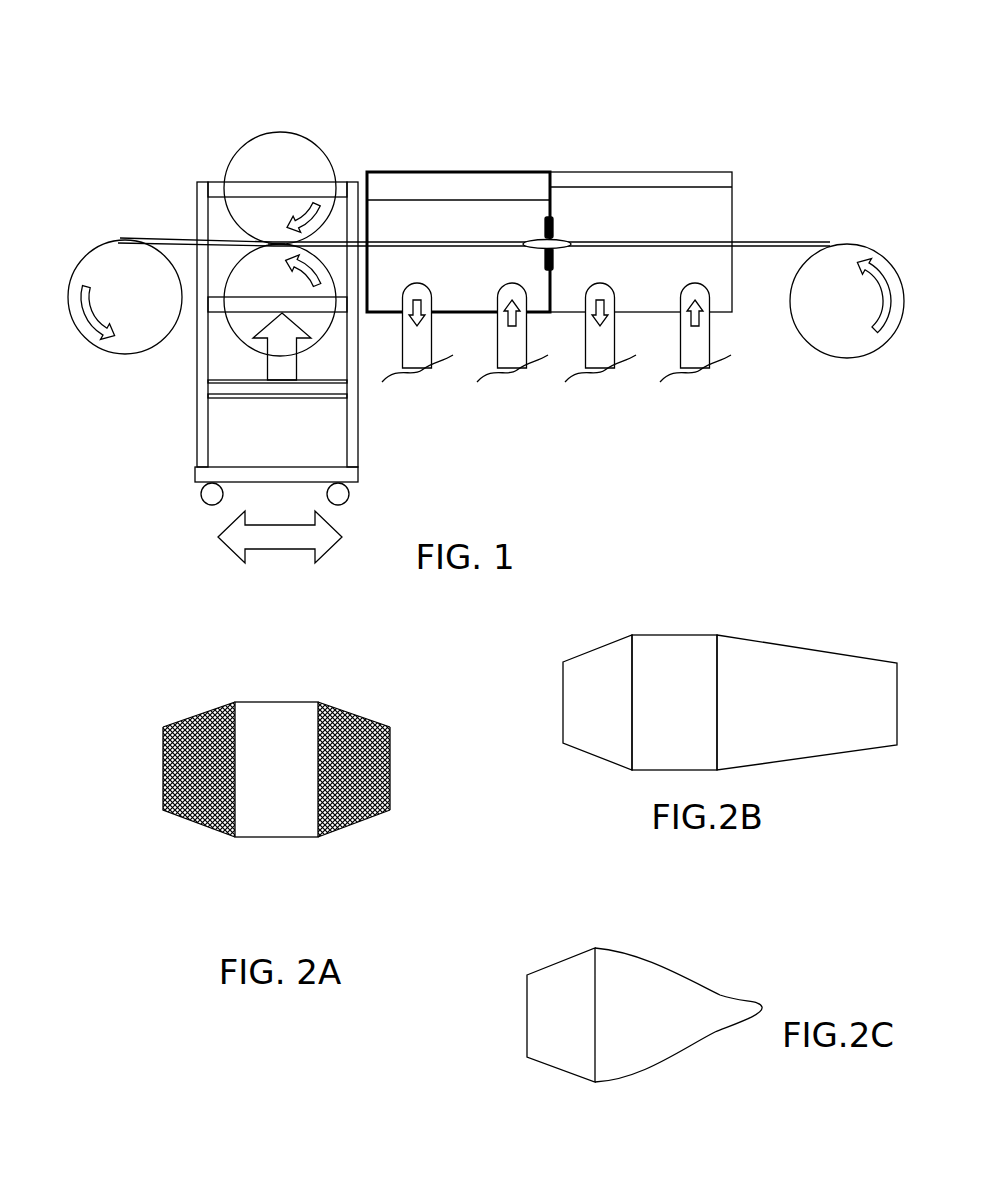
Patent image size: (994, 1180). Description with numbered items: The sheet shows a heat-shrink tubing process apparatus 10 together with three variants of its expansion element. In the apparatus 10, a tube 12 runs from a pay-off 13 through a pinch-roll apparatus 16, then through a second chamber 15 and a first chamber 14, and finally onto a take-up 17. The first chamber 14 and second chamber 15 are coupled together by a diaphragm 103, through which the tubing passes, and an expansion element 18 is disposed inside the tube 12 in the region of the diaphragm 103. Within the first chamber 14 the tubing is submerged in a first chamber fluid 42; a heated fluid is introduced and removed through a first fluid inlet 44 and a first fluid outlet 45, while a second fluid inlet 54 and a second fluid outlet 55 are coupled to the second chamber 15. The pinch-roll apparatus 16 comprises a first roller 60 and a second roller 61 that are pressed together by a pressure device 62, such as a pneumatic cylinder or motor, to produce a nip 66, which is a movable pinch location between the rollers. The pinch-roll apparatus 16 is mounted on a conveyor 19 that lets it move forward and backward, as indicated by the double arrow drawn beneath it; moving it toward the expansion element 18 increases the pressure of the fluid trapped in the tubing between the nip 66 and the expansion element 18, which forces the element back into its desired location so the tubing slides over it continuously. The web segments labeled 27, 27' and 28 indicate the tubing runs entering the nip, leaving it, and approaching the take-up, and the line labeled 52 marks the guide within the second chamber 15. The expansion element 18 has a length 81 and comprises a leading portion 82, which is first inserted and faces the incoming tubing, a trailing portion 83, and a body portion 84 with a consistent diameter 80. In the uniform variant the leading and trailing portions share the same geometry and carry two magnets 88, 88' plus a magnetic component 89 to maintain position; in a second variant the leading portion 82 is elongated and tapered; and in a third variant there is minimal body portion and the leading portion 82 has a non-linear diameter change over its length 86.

In FIG. 1, the heat-shrink tubing process apparatus 10 is at (362, 78).
In FIG. 1, the tube 12 is at (828, 238).
In FIG. 1, the pay-off 13 is at (823, 346).
In FIG. 1, the first chamber 14 is at (710, 178).
In FIG. 1, the second chamber 15 is at (413, 178).
In FIG. 1, the pinch-roll apparatus 16 is at (253, 158).
In FIG. 1, the take-up 17 is at (103, 273).
In FIG. 1, the expansion element 18 is at (568, 240).
In FIG. 2A, the expansion element 18 is at (247, 723).
In FIG. 2B, the expansion element 18 is at (660, 655).
In FIG. 2C, the expansion element 18 is at (622, 983).
In FIG. 1, the conveyor 19 is at (343, 473).
In FIG. 1, the web portion 27 is at (411, 174).
In FIG. 1, the incoming web portion 27' is at (176, 180).
In FIG. 1, the outgoing web portion 28 is at (770, 241).
In FIG. 1, the first chamber fluid 42 is at (637, 178).
In FIG. 1, the first fluid inlet 44 is at (700, 352).
In FIG. 1, the first fluid outlet 45 is at (603, 352).
In FIG. 1, the station inner guide 52 is at (478, 186).
In FIG. 1, the second fluid inlet 54 is at (517, 352).
In FIG. 1, the second fluid outlet 55 is at (422, 352).
In FIG. 1, the first roller 60 is at (260, 146).
In FIG. 1, the second roller 61 is at (235, 320).
In FIG. 1, the pressure device 62 is at (282, 372).
In FIG. 1, the nip 66 is at (283, 240).
In FIG. 2A, the diameter 80 is at (273, 705).
In FIG. 2A, the length 81 is at (390, 823).
In FIG. 2A, the leading portion 82 is at (357, 717).
In FIG. 2B, the leading portion 82 is at (758, 672).
In FIG. 2C, the leading portion 82 is at (713, 995).
In FIG. 2A, the trailing portion 83 is at (177, 723).
In FIG. 2B, the trailing portion 83 is at (590, 673).
In FIG. 2C, the trailing portion 83 is at (547, 1000).
In FIG. 2A, the body portion 84 is at (292, 722).
In FIG. 2B, the body portion 84 is at (698, 663).
In FIG. 2C, the length 86 is at (762, 1020).
In FIG. 2A, the magnet 88 is at (396, 701).
In FIG. 2A, the magnet 88' is at (199, 657).
In FIG. 2A, the magnetic component 89 is at (390, 768).
In FIG. 1, the diaphragm 103 is at (548, 216).